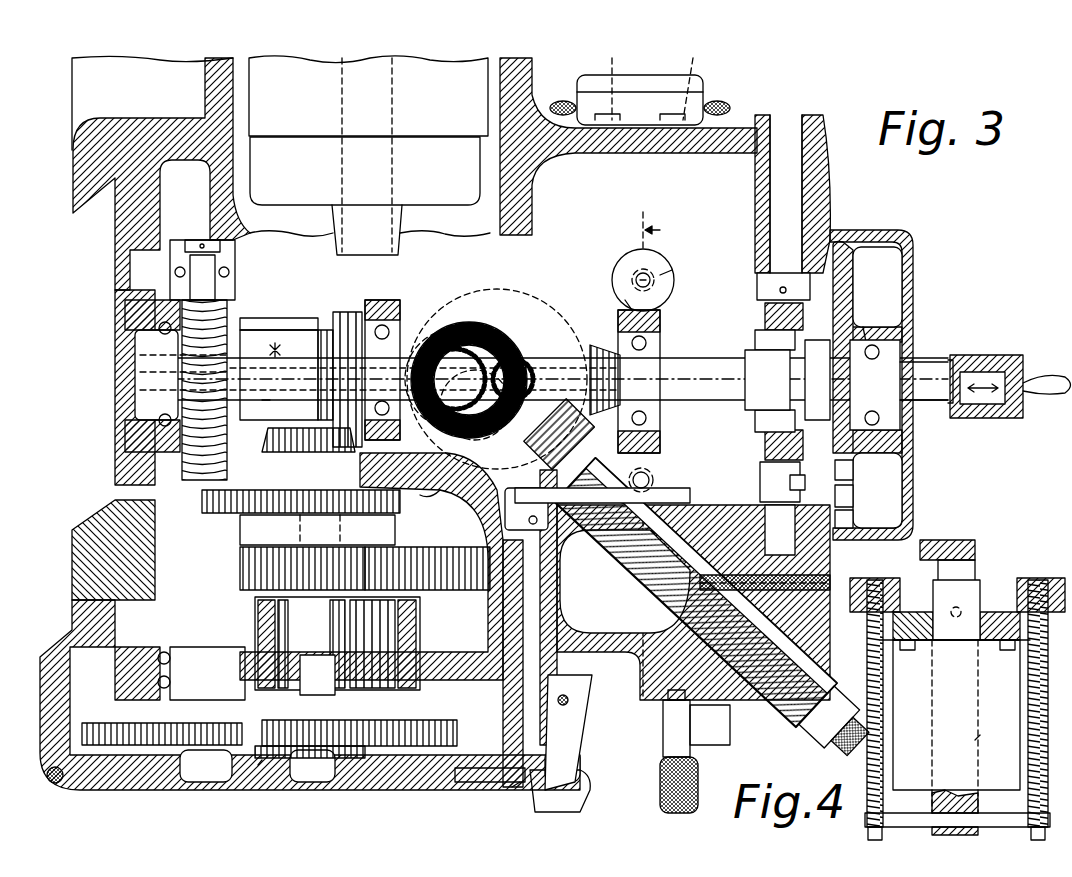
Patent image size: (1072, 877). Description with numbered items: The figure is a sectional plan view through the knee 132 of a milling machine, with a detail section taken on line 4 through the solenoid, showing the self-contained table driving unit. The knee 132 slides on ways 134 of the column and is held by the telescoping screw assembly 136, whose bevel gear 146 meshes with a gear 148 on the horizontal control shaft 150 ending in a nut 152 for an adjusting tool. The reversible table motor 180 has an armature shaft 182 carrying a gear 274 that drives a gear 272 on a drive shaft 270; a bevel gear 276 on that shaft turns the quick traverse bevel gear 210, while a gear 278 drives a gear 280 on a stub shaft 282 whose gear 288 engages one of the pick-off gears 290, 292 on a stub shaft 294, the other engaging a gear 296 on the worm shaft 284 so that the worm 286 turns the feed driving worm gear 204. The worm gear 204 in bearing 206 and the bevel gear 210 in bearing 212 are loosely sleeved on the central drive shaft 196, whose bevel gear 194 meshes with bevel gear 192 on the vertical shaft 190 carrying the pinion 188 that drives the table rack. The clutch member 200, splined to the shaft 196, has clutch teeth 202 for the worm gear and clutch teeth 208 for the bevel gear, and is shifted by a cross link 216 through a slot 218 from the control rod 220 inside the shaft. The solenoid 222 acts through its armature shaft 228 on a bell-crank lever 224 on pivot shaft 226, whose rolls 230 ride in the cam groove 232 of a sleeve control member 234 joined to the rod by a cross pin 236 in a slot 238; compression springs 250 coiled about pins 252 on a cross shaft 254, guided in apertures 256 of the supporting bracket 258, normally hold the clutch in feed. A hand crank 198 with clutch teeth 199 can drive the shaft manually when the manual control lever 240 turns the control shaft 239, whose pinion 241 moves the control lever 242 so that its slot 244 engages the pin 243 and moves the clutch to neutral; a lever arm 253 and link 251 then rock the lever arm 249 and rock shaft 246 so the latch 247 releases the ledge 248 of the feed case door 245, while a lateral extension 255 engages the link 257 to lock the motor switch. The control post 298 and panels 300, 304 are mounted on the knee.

In FIG. 3, the section line 4- 4 is at (660, 456).
In FIG. 3, the knee 132 is at (620, 652).
In FIG. 3, the ways 134 is at (73, 213).
In FIG. 3, the telescoping screw assembly 136 is at (440, 425).
In FIG. 3, the bevel gear 146 is at (470, 442).
In FIG. 3, the gear 148 is at (520, 452).
In FIG. 3, the control shaft 150 is at (672, 575).
In FIG. 3, the nut 152 is at (820, 716).
In FIG. 3, the table motor 180 is at (305, 70).
In FIG. 3, the armature shaft 182 is at (380, 60).
In FIG. 3, the pinion 188 is at (535, 300).
In FIG. 3, the vertical shaft 190 is at (510, 320).
In FIG. 3, the bevel gear 192 is at (478, 325).
In FIG. 3, the bevel gear 194 is at (540, 352).
In FIG. 3, the drive shaft 196 is at (928, 368).
In FIG. 3, the hand crank 198 is at (1040, 395).
In FIG. 3, the clutch teeth 199 is at (953, 420).
In FIG. 3, the slow feed and quick traverse member 200 is at (305, 338).
In FIG. 3, the clutch teeth 202 is at (258, 318).
In FIG. 3, the feed driving worm gear 204 is at (210, 485).
In FIG. 3, the bearing 206 is at (125, 322).
In FIG. 3, the clutch teeth 208 is at (340, 312).
In FIG. 3, the bevel gear 210 is at (367, 171).
In FIG. 3, the bearing 212 is at (405, 340).
In FIG. 3, the cross link 216 is at (262, 400).
In FIG. 3, the slot 218 is at (280, 345).
In FIG. 3, the control rod 220 is at (135, 372).
In FIG. 3, the solenoid 222 is at (625, 300).
In FIG. 4, the solenoid 222 is at (930, 793).
In FIG. 3, the bell-crank lever 224 is at (765, 310).
In FIG. 4, the bell-crank lever 224 is at (975, 548).
In FIG. 3, the pivot shaft 226 is at (780, 190).
In FIG. 4, the armature shaft 228 is at (975, 745).
In FIG. 3, the rolls 230 is at (755, 337).
In FIG. 3, the cam groove 232 is at (745, 360).
In FIG. 3, the sleeve control member 234 is at (846, 330).
In FIG. 3, the cross pin 236 is at (845, 290).
In FIG. 3, the slot 238 is at (820, 394).
In FIG. 3, the control shaft 239 is at (740, 598).
In FIG. 3, the manual control lever 240 is at (663, 731).
In FIG. 3, the pinion 241 is at (776, 530).
In FIG. 3, the control lever 242 is at (853, 517).
In FIG. 3, the pin 243 is at (779, 482).
In FIG. 3, the slot 244 is at (795, 482).
In FIG. 3, the feed case door 245 is at (567, 803).
In FIG. 3, the rock shaft 246 is at (535, 742).
In FIG. 3, the latch 247 is at (512, 787).
In FIG. 3, the ledge 248 is at (490, 768).
In FIG. 3, the lever arm 249 is at (548, 527).
In FIG. 3, the compression springs 250 is at (650, 282).
In FIG. 4, the compression springs 250 is at (875, 680).
In FIG. 3, the link 251 is at (598, 500).
In FIG. 3, the pins 252 is at (640, 280).
In FIG. 4, the pins 252 is at (875, 720).
In FIG. 3, the lever arm 253 is at (649, 472).
In FIG. 3, the cross shaft 254 is at (549, 379).
In FIG. 4, the cross shaft 254 is at (1005, 820).
In FIG. 3, the lateral extension 255 is at (853, 493).
In FIG. 4, the apertures 256 is at (1010, 652).
In FIG. 3, the link 257 is at (850, 465).
In FIG. 3, the supporting bracket 258 is at (630, 260).
In FIG. 4, the supporting bracket 258 is at (935, 605).
In FIG. 3, the drive shaft 270 is at (290, 535).
In FIG. 3, the gear 272 is at (308, 490).
In FIG. 3, the gear 274 is at (425, 495).
In FIG. 3, the bevel gear 276 is at (310, 428).
In FIG. 3, the gear 278 is at (300, 563).
In FIG. 3, the gear 280 is at (478, 590).
In FIG. 3, the stub shaft 282 is at (337, 643).
In FIG. 3, the worm shaft 284 is at (200, 240).
In FIG. 3, the worm 286 is at (205, 277).
In FIG. 3, the gear 288 is at (457, 716).
In FIG. 3, the pick-off gear 290 is at (258, 765).
In FIG. 3, the pick-off gear 292 is at (315, 770).
In FIG. 3, the stub shaft 294 is at (315, 675).
In FIG. 3, the gear 296 is at (88, 725).
In FIG. 3, the control post 298 is at (884, 232).
In FIG. 3, the panel 300 is at (640, 83).
In FIG. 3, the panel 304 is at (676, 81).